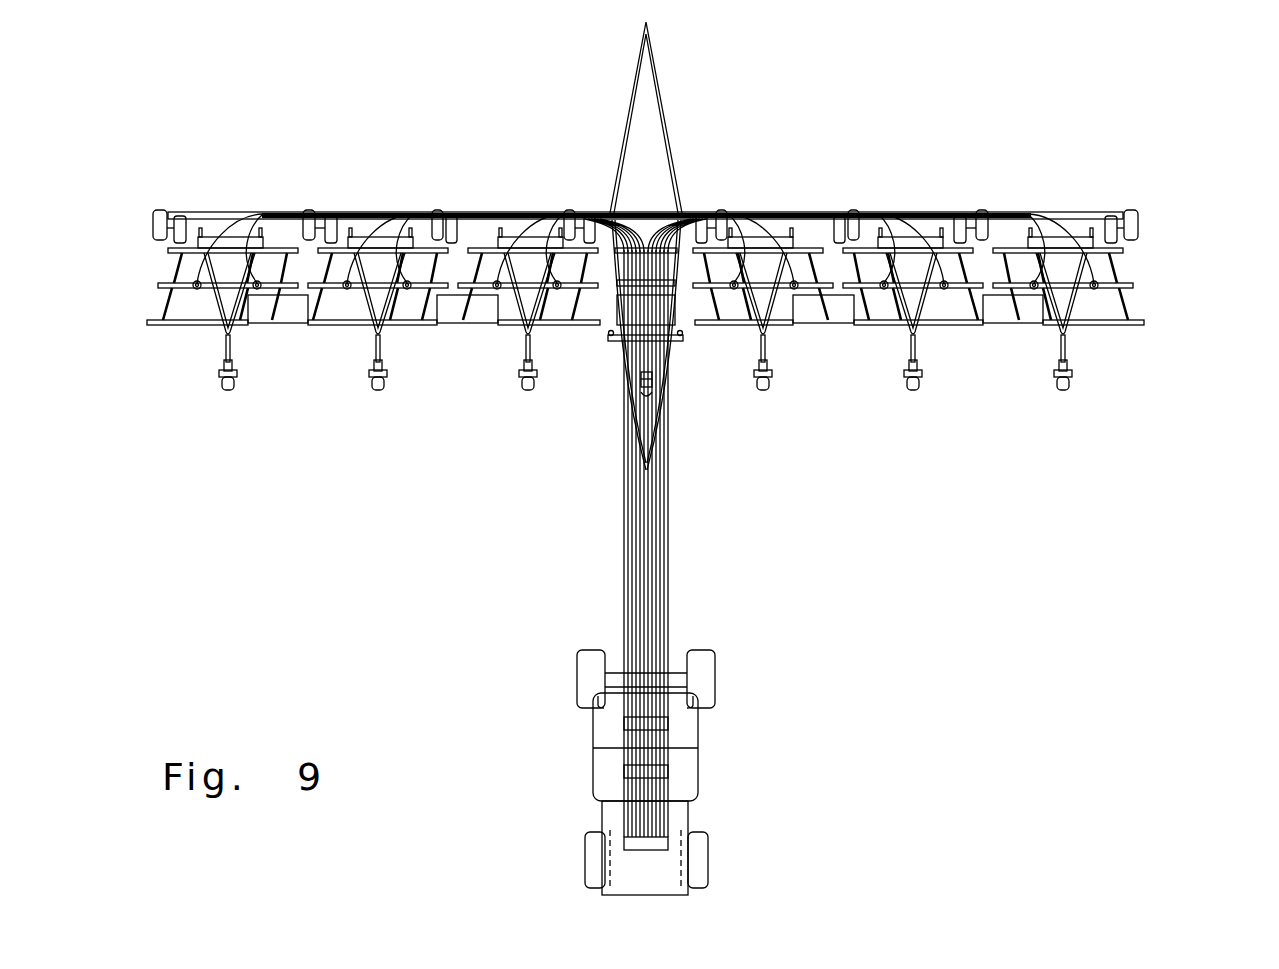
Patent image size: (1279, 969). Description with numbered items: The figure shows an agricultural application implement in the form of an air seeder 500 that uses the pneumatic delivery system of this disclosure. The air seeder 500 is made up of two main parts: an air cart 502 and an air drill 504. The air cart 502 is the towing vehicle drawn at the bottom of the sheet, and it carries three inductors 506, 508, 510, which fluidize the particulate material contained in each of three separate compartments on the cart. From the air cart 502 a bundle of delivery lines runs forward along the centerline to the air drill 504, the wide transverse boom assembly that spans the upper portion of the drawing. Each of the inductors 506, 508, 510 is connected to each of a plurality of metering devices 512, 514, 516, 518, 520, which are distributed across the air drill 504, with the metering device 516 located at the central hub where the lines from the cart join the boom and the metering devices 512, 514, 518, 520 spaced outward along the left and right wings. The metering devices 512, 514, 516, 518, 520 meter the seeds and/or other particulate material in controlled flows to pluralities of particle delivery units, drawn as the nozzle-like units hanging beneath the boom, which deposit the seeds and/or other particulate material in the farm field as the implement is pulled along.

The air seeder 500 is at (148, 203).
The air cart 502 is at (718, 733).
The air drill 504 is at (1153, 238).
The inductor 506 is at (660, 842).
The inductor 508 is at (633, 773).
The inductor 510 is at (628, 725).
The metering device 512 is at (285, 317).
The metering device 514 is at (468, 317).
The metering device 516 is at (632, 315).
The metering device 518 is at (820, 313).
The metering device 520 is at (1013, 312).